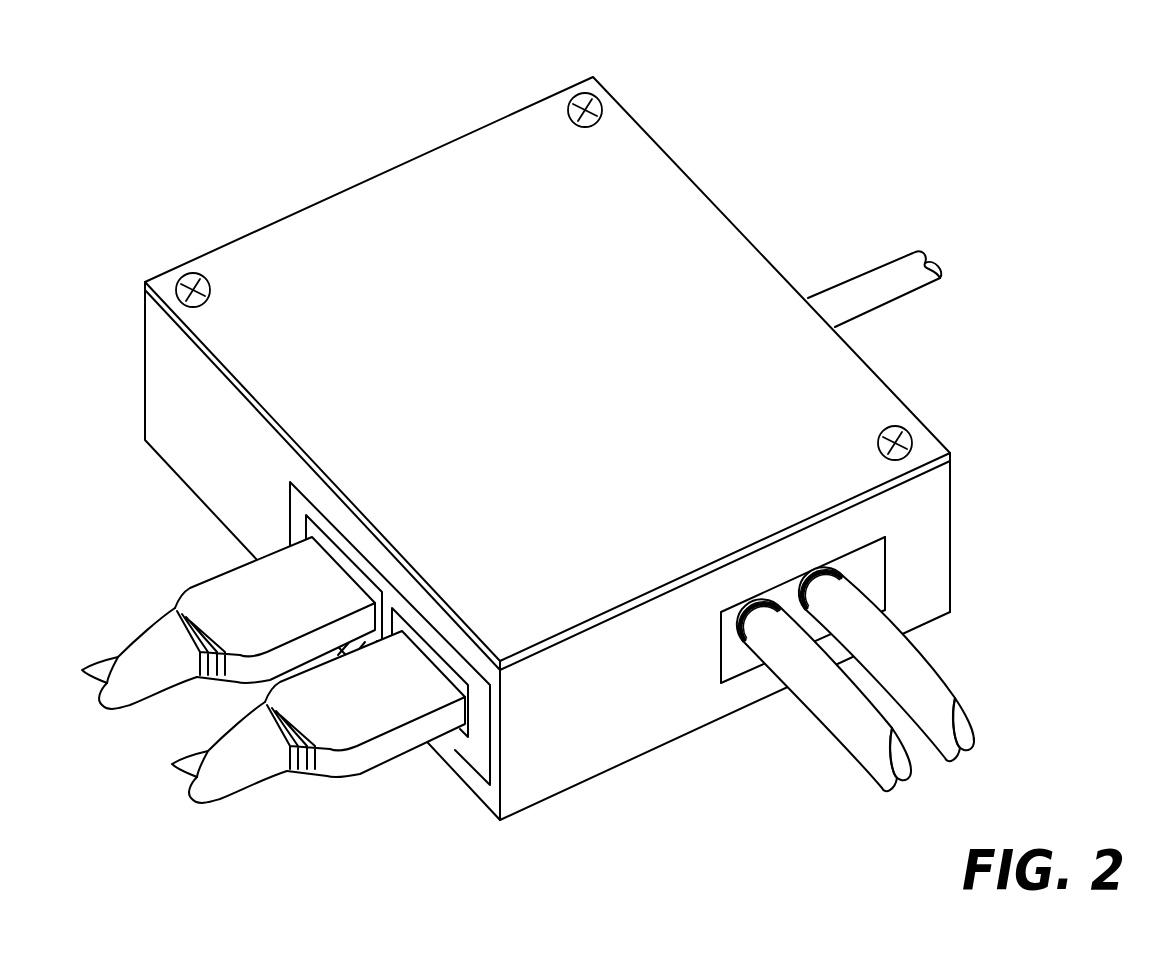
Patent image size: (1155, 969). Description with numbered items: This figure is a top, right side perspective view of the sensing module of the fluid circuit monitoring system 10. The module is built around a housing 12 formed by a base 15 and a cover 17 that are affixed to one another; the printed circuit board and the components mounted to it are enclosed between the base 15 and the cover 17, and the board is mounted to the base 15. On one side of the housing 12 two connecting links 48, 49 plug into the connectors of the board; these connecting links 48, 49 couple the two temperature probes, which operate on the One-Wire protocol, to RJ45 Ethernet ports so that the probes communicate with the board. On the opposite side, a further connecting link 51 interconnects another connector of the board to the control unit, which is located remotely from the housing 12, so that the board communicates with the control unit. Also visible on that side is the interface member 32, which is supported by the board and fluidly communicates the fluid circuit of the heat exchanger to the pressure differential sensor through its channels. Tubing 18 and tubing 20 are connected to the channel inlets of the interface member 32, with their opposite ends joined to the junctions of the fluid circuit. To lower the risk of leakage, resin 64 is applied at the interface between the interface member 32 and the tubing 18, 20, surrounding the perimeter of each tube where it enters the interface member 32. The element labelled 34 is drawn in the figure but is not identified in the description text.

The fluid circuit monitoring system 10 is at (708, 68).
The housing 12 is at (488, 135).
The base 15 is at (275, 236).
The cover 17 is at (593, 778).
The tubing 18 is at (952, 685).
The tubing 20 is at (855, 749).
The interface member 32 is at (871, 576).
The plate edge 34 is at (887, 593).
The connecting link 48 is at (192, 597).
The connecting link 49 is at (385, 753).
The connecting link 51 is at (892, 272).
The resin 64 is at (843, 570).